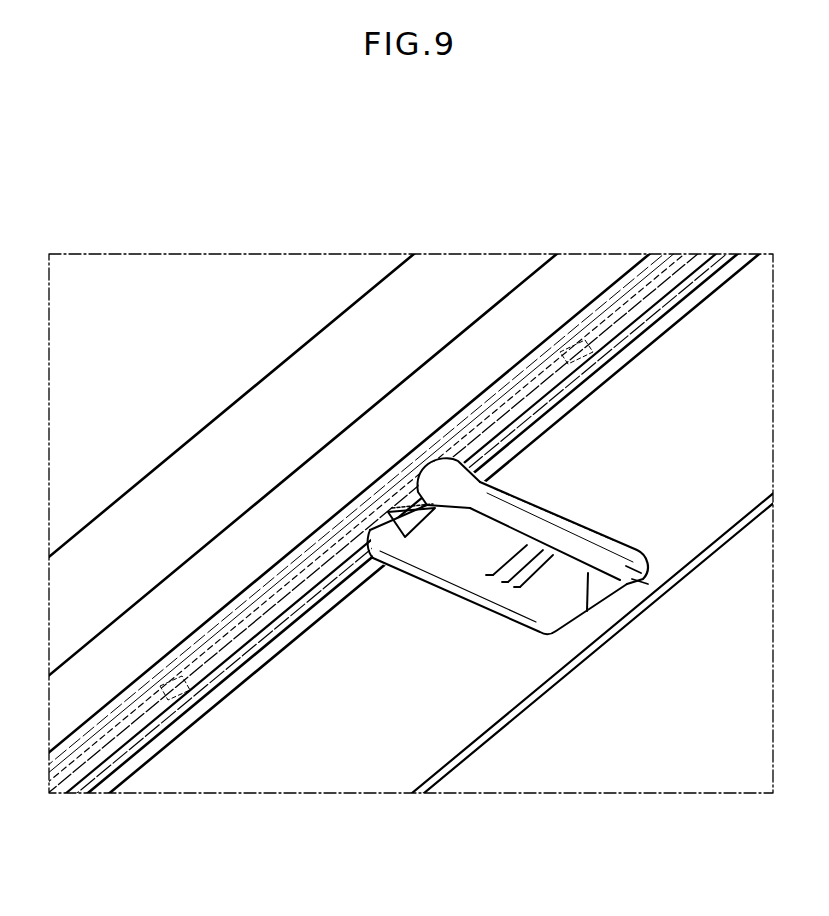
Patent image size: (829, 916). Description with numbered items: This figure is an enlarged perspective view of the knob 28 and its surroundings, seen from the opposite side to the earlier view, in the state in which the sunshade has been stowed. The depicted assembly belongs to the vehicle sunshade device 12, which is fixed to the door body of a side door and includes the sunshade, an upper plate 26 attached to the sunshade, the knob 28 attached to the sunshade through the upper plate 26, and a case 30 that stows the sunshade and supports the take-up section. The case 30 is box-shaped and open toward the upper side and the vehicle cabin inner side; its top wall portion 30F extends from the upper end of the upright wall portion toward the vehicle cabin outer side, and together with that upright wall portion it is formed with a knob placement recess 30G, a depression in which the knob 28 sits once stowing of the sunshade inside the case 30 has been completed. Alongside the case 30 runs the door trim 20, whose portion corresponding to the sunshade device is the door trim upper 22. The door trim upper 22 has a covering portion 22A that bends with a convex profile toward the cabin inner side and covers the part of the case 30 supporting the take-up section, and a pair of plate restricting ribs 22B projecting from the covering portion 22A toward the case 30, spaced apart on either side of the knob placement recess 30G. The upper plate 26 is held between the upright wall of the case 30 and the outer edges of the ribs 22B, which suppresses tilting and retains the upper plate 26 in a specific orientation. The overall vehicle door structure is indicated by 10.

The seat slide device 10 is at (468, 313).
The vehicle sunshade device 12 is at (686, 709).
The door trim 20 is at (414, 358).
The door trim upper 22 is at (239, 437).
The covering portion 22A is at (188, 487).
The plate restricting ribs 22B is at (573, 353).
The upper plate 26 is at (305, 620).
The knob 28 is at (483, 540).
The case 30 is at (468, 702).
The top wall portion 30F is at (523, 668).
The knob placement recess 30G is at (641, 565).